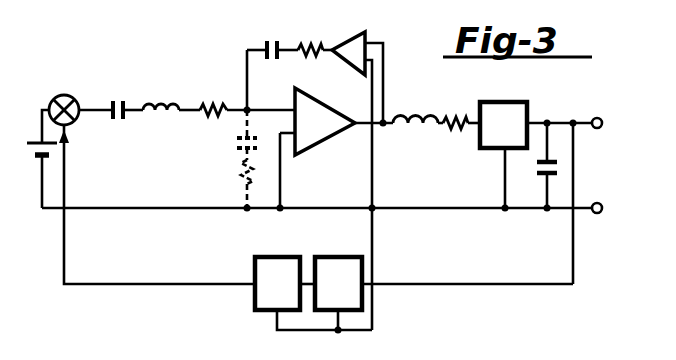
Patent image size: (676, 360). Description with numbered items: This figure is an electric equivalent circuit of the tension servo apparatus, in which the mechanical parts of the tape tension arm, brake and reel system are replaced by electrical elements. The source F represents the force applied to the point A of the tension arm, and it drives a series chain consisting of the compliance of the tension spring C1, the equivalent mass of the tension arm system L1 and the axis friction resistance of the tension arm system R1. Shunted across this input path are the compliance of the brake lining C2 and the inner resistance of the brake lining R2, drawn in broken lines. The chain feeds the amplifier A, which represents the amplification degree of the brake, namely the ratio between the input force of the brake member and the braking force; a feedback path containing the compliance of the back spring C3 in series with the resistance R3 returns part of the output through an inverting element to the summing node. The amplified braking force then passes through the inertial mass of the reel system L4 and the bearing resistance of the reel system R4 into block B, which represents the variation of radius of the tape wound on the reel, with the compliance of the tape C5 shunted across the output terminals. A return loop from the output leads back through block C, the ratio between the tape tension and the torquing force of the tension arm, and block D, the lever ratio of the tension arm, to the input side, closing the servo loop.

The force applied to point A F is at (38, 157).
The compliance of the tension spring C1 is at (118, 103).
The equivalent mass of the tension arm system L1 is at (165, 104).
The axis friction resistance of the tension arm system R1 is at (214, 104).
The compliance of the brake lining C2 is at (236, 144).
The inner resistance of the brake lining R2 is at (238, 180).
The compliance of the back spring C3 is at (272, 44).
The feedback resistor R3 is at (312, 45).
The amplification degree of the brake system A is at (325, 121).
The inertial mass of the reel system L4 is at (413, 134).
The bearing resistance of the reel system R4 is at (457, 133).
The variation of radius of the tape wound on the reel B is at (503, 125).
The compliance of the tape C5 is at (543, 179).
The lever ratio of the tension arm D is at (277, 283).
The ratio between tape tension and torquing force of the tension arm C is at (338, 283).